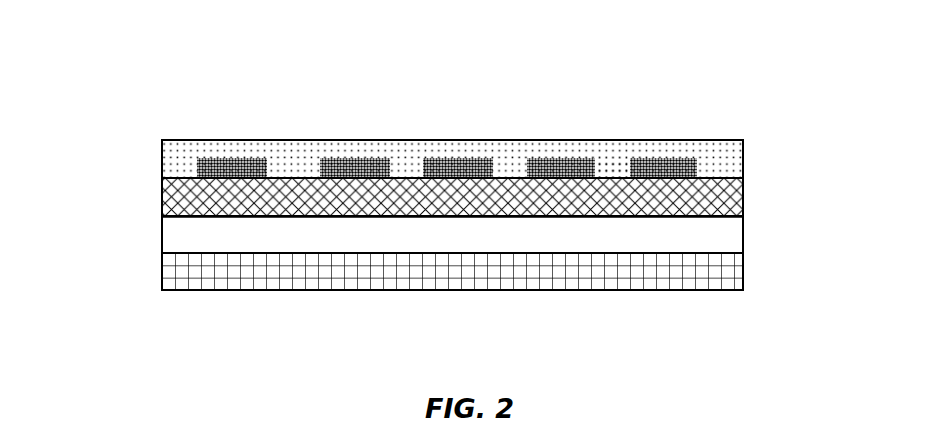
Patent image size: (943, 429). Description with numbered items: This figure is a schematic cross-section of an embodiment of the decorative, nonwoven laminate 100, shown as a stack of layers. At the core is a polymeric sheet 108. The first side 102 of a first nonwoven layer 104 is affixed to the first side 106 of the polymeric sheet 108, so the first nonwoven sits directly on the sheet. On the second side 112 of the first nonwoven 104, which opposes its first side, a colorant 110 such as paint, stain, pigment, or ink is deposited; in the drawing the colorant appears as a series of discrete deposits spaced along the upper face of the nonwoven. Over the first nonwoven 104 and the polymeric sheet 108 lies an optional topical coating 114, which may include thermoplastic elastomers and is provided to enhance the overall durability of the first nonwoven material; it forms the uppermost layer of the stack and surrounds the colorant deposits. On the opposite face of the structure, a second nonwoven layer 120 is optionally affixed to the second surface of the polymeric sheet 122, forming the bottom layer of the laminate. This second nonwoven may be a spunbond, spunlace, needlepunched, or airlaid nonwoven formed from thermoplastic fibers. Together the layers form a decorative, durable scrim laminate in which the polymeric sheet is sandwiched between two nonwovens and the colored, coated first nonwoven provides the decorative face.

The decorative, nonwoven laminate 100 is at (142, 73).
The first side of first nonwoven layer 102 is at (678, 215).
The first nonwoven layer 104 is at (168, 181).
The first side of polymeric sheet 106 is at (725, 215).
The polymeric sheet 108 is at (177, 238).
The colorant 110 is at (664, 158).
The second side of first nonwoven 112 is at (617, 178).
The topical coating 114 is at (175, 160).
The second nonwoven layer 120 is at (175, 272).
The second surface of polymeric sheet 122 is at (728, 252).